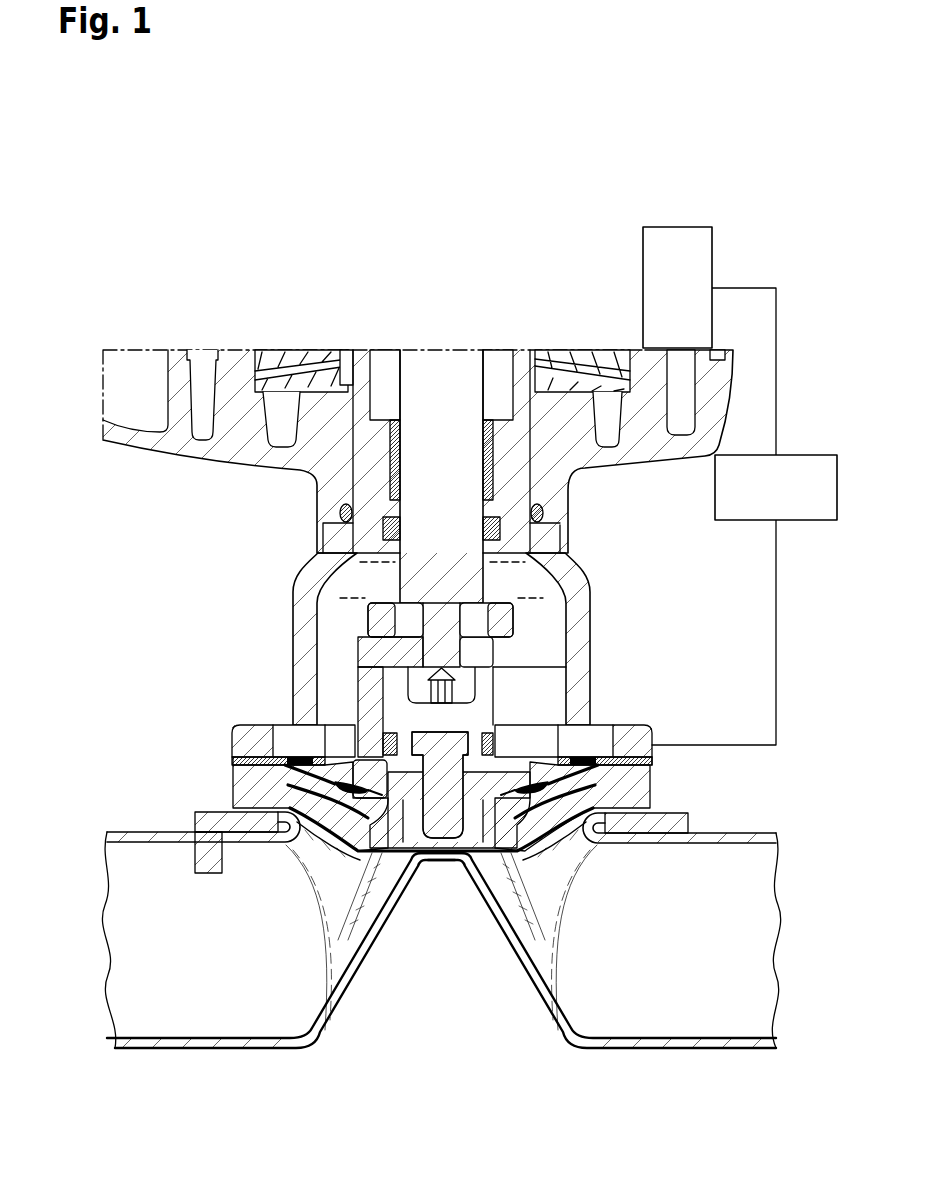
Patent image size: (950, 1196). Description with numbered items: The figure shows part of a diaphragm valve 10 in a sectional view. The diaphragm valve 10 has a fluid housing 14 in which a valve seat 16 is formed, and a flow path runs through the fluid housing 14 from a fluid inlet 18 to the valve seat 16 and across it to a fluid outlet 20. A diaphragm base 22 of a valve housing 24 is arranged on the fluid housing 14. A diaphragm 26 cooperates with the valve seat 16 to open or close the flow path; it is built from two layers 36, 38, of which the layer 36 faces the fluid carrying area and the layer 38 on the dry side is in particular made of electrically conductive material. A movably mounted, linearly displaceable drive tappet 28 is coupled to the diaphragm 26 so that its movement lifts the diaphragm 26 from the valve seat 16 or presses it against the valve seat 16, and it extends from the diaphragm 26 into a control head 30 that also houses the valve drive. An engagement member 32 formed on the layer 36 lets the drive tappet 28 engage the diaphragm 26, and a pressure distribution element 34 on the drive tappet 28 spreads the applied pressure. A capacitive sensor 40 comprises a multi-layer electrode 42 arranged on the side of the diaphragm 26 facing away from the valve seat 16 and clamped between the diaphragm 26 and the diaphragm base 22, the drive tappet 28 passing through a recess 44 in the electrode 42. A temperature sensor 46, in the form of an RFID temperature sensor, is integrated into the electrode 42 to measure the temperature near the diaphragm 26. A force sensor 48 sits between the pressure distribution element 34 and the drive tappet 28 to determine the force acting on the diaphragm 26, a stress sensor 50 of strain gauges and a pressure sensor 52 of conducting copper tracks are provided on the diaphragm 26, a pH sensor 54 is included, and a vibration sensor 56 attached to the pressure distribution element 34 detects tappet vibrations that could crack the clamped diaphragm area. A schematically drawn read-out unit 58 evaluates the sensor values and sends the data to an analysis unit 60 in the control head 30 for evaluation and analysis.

The diaphragm valve 10 is at (200, 172).
The fluid housing 14 is at (230, 1008).
The valve seat 16 is at (455, 862).
The fluid inlet 18 is at (138, 950).
The fluid outlet 20 is at (752, 953).
The diaphragm base 22 is at (300, 592).
The valve housing 24 is at (135, 372).
The diaphragm 26 is at (250, 793).
The drive tappet 28 is at (412, 467).
The control head 30 is at (687, 428).
The engagement member 32 is at (443, 757).
The pressure distribution element 34 is at (487, 680).
The layer 36 is at (538, 838).
The layer 38 is at (635, 798).
The capacitive sensor 40 is at (622, 755).
The electrode 42 is at (479, 707).
The recess 44 is at (550, 760).
The temperature sensor 46 is at (330, 763).
The force sensor 48 is at (502, 622).
The stress sensor 50 is at (705, 847).
The pressure sensor 52 is at (372, 842).
The pH sensor 54 is at (190, 858).
The vibration sensor 56 is at (487, 737).
The read-out unit 58 is at (812, 455).
The analysis unit 60 is at (683, 227).